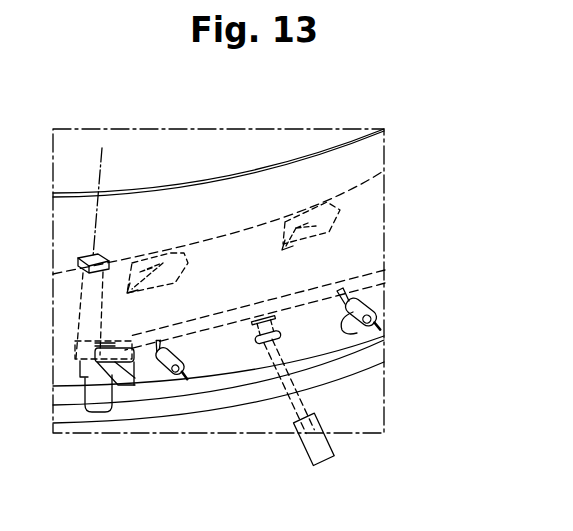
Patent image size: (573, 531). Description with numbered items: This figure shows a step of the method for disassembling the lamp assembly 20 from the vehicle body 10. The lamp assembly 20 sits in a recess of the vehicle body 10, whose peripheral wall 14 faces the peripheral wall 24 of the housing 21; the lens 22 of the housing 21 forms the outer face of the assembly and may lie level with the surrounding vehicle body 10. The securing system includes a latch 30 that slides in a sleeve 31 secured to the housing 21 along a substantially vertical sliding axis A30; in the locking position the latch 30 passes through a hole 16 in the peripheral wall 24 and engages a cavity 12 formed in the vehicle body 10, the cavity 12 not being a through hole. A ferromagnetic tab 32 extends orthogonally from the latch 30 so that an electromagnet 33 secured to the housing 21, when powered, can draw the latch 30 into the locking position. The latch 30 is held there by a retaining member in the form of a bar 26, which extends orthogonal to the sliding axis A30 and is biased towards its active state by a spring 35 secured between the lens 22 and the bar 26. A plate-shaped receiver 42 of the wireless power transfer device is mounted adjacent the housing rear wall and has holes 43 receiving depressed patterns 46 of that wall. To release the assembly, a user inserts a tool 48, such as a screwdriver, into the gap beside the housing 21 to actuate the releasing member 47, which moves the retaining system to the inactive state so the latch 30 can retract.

The vehicle body 10 is at (88, 162).
The cavity 12 is at (102, 424).
The peripheral wall 14 is at (218, 404).
The peripheral wall 24 is at (244, 388).
The hole 16 is at (84, 384).
The lamp assembly 20 is at (254, 150).
The housing 21 is at (219, 183).
The lens 22 is at (357, 165).
The bar 26 is at (362, 275).
The latch 30 is at (80, 361).
The sleeve 31 is at (93, 305).
The tab 32 is at (113, 345).
The electromagnet 33 is at (135, 390).
The spring 35 is at (160, 360).
The receiver 42 is at (360, 228).
The holes 43 is at (193, 272).
The depressed pattern 46 is at (168, 270).
The releasing member 47 is at (273, 322).
The tool 48 is at (313, 448).
The sliding axis A30 is at (103, 171).